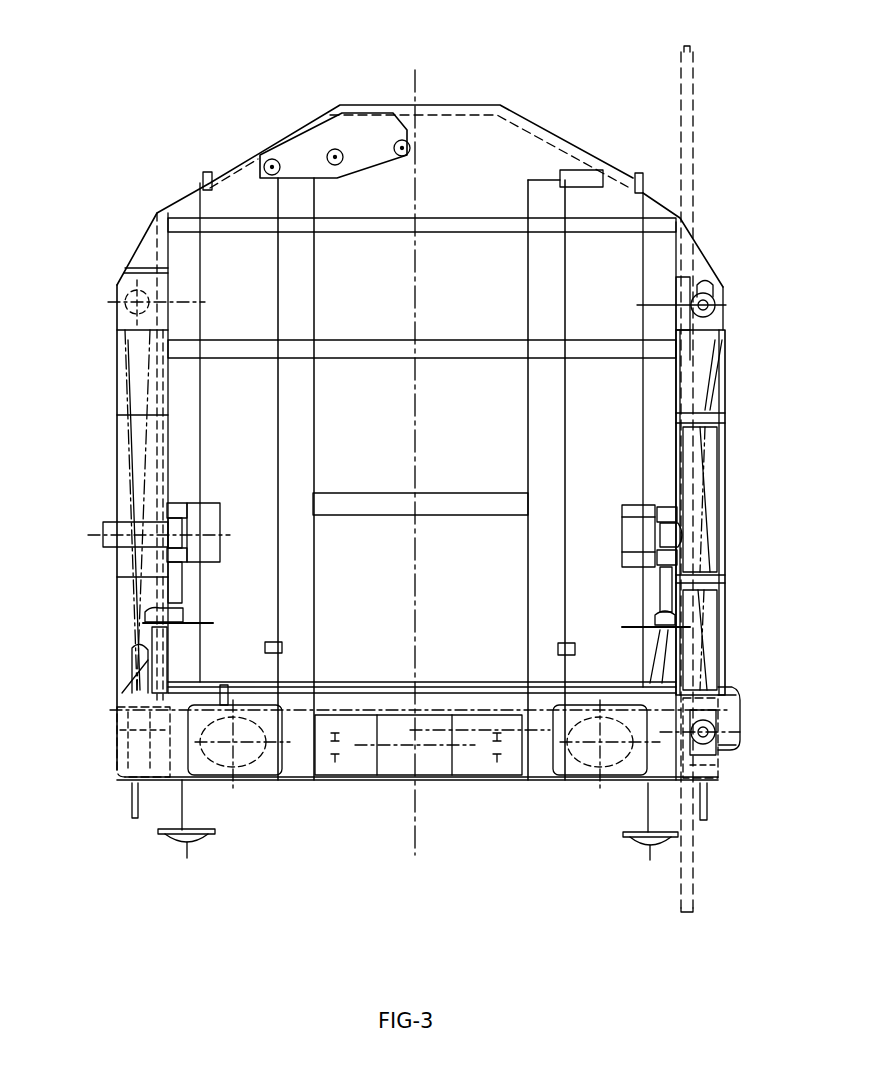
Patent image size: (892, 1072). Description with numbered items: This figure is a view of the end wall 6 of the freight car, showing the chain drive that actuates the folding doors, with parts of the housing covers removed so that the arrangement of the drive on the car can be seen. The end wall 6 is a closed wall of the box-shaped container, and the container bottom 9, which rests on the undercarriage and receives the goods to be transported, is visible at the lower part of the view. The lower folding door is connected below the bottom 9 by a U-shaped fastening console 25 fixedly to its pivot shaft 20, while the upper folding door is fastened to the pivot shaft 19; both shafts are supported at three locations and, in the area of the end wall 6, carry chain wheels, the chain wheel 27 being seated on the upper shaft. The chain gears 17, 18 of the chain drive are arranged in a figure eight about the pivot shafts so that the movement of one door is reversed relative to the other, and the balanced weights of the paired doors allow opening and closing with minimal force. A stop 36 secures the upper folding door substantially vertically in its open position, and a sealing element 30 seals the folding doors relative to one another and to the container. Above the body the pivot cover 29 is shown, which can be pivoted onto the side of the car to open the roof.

The end wall 6 is at (622, 245).
The container bottom 9 is at (423, 702).
The chain gear 17 is at (127, 368).
The chain gear 18 is at (710, 457).
The pivot shaft 19 is at (715, 308).
The pivot shaft 20 is at (715, 720).
The U-shaped fastening console 25 is at (725, 687).
The chain wheel 27 is at (707, 293).
The pivot cover 29 is at (295, 132).
The sealing element 30 is at (688, 50).
The stop 36 is at (677, 245).